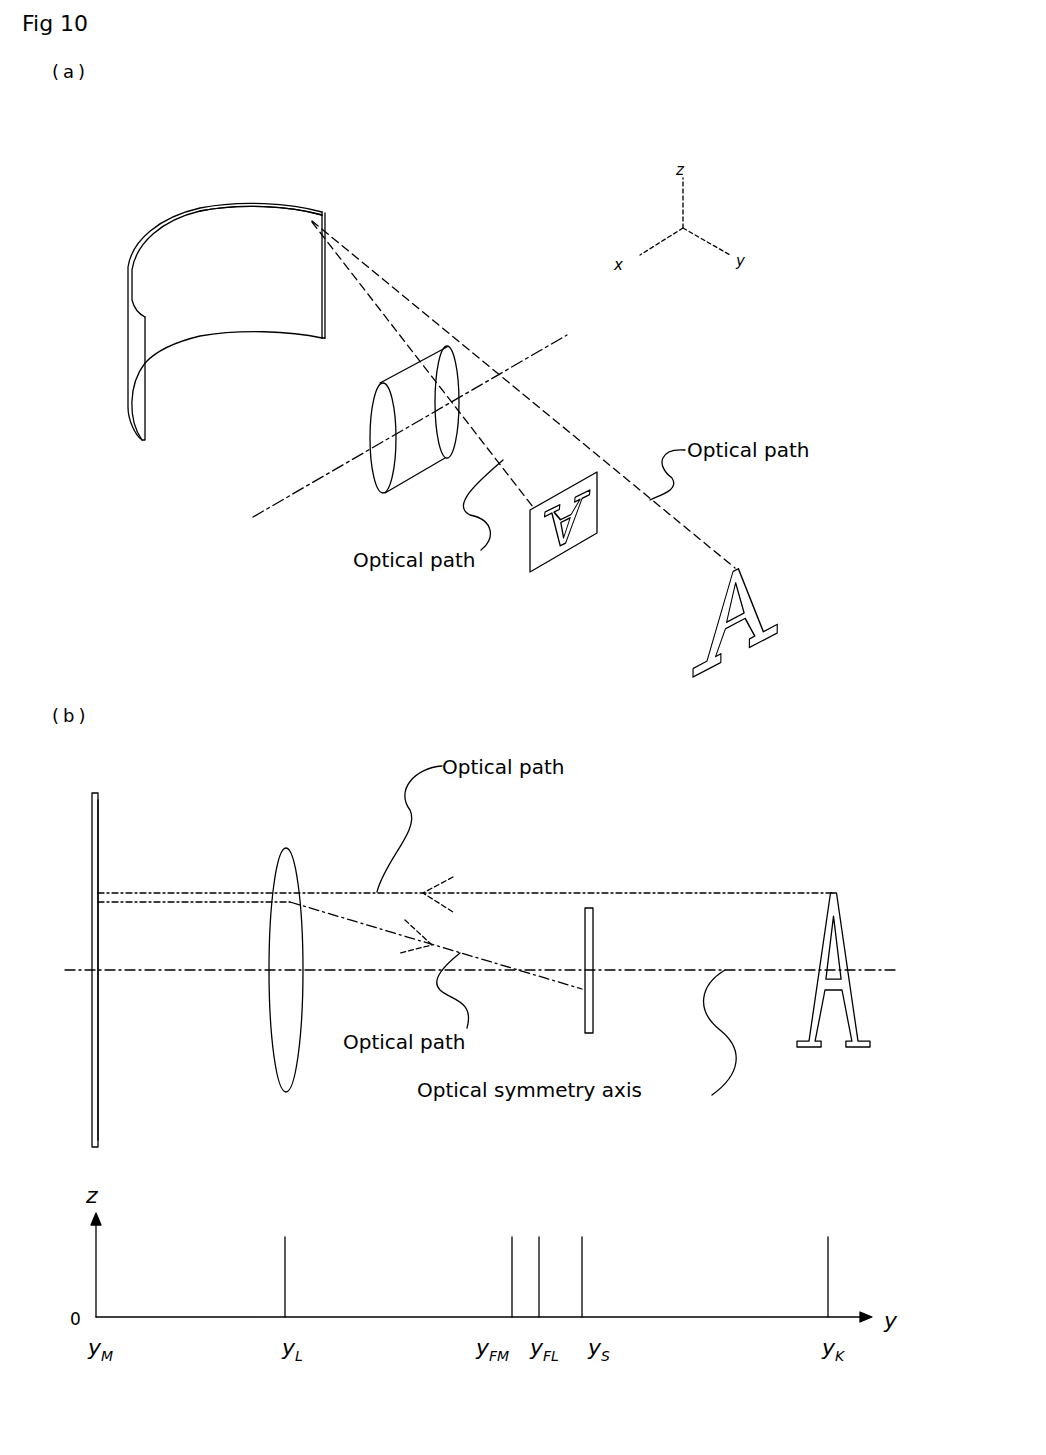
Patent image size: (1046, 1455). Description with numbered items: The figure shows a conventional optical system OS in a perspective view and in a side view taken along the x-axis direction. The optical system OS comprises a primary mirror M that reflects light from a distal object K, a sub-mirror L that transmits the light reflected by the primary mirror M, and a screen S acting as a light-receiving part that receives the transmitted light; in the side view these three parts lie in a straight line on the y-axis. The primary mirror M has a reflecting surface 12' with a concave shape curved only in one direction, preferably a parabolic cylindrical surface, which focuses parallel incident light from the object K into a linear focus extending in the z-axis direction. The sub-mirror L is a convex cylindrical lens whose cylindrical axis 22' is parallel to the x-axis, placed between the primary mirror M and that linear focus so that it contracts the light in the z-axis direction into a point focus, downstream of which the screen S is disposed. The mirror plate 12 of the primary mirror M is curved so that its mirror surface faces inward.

The primary mirror M is at (200, 205).
The reflecting surface 12 is at (144, 970).
The reflecting surface 12' is at (299, 179).
The cylindrical axis 22' is at (377, 387).
The sub-mirror L is at (377, 477).
The screen S is at (540, 572).
The object K is at (740, 600).
The optical system OS is at (545, 165).